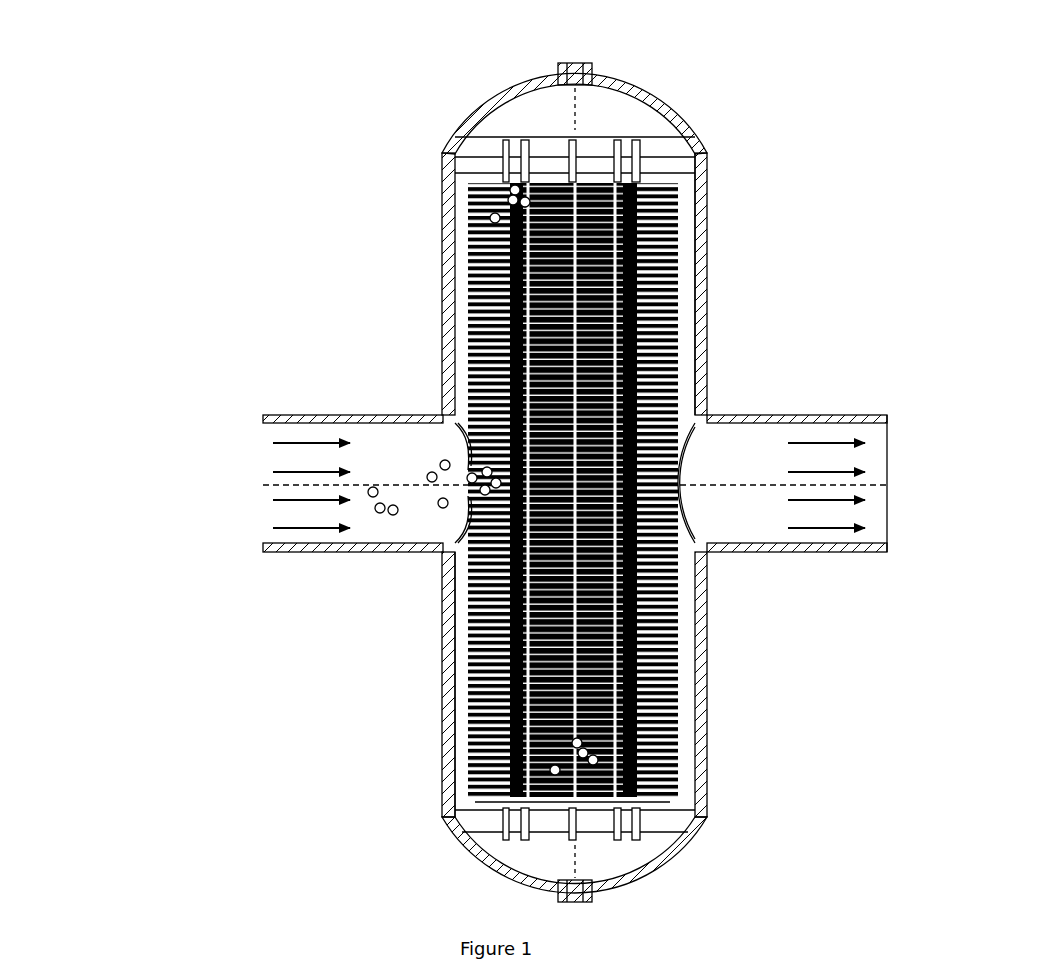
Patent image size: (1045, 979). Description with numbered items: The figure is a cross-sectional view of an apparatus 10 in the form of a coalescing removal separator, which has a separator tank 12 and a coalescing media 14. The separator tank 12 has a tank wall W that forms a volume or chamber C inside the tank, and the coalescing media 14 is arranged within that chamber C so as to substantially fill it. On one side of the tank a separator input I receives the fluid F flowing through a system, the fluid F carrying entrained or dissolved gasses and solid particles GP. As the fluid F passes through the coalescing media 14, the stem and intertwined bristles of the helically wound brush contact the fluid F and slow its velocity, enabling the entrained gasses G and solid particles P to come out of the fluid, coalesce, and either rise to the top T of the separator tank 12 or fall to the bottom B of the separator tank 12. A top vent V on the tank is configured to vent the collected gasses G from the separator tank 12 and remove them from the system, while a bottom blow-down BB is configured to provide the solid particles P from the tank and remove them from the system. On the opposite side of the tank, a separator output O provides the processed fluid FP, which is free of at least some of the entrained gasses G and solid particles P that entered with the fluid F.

The apparatus 10 is at (338, 102).
The separator tank 12 is at (442, 767).
The coalescing media 14 is at (470, 300).
The top of the separator tank T is at (487, 102).
The top vent V is at (592, 67).
The bottom of the separator tank B is at (470, 862).
The bottom blow-down BB is at (582, 875).
The tank wall W is at (453, 705).
The volume/chamber C is at (687, 278).
The separator input I is at (365, 415).
The fluid F is at (237, 500).
The entrained gasses and solid particles GP is at (393, 515).
The separator output O is at (818, 547).
The processed fluid FP is at (827, 443).
The entrained gasses G is at (478, 188).
The solid particles P is at (600, 748).